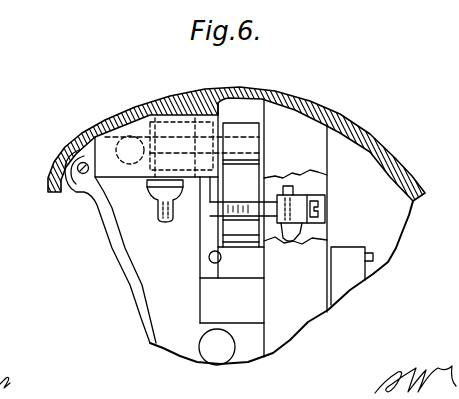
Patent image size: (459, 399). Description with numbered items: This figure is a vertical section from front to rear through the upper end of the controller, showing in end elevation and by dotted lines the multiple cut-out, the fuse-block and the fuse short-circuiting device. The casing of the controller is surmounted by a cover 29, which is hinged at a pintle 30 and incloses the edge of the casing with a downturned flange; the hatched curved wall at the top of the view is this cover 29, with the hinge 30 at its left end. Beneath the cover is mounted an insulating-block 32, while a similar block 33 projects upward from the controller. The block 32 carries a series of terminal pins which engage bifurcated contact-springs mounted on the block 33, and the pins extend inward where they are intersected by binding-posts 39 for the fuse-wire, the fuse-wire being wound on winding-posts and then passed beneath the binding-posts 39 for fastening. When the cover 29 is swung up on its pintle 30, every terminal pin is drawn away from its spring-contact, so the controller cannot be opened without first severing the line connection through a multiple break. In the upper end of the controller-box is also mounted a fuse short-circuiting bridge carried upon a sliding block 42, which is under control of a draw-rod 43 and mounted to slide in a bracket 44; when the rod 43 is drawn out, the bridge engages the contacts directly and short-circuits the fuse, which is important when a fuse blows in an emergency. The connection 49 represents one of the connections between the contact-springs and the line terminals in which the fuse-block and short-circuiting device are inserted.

The cover 29 is at (316, 119).
The pintle 30 is at (82, 178).
The insulating-block 32 is at (168, 127).
The block 33 is at (273, 135).
The binding-post 39 is at (163, 222).
The sliding block 42 is at (232, 262).
The draw-rod 43 is at (209, 260).
The bracket 44 is at (232, 307).
The connection 49 is at (296, 236).